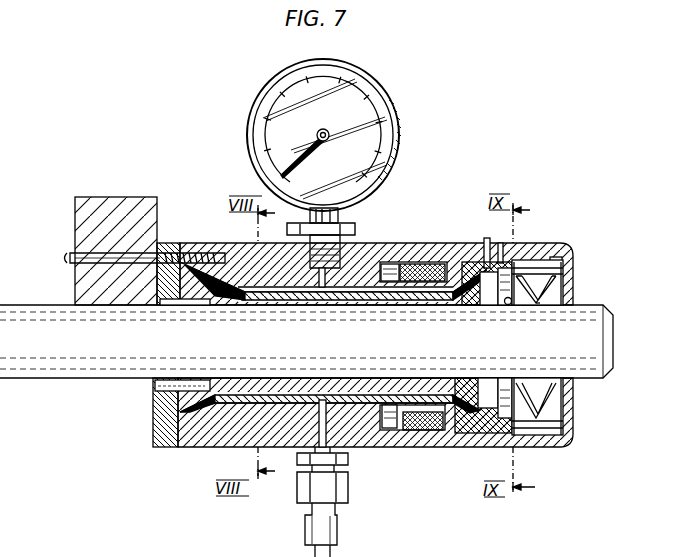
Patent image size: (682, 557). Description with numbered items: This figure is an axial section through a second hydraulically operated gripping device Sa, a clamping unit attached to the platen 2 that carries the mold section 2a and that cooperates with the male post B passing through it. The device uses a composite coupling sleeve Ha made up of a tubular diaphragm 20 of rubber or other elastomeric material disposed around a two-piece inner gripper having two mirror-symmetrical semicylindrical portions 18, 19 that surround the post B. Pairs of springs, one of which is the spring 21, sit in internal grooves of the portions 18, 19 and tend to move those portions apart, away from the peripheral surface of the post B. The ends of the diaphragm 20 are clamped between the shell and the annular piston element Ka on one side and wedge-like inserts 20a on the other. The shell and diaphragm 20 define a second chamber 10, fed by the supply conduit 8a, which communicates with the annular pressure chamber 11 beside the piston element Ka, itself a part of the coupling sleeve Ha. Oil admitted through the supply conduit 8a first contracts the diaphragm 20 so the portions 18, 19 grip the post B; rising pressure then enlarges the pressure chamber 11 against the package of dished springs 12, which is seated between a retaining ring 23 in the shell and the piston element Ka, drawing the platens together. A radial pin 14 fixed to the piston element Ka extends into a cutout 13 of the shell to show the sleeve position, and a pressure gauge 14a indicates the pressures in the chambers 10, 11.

The post B is at (33, 304).
The platen 2 is at (136, 213).
The mold section 2a is at (193, 447).
The second gripping device Sa is at (393, 240).
The composite coupling sleeve Ha is at (362, 285).
The pressure gauge 14a is at (394, 108).
The annular piston element Ka is at (446, 262).
The annular pressure chamber 11 is at (390, 431).
The second chamber 10 is at (358, 403).
The semicylindrical portion 18 is at (248, 290).
The semicylindrical portion 19 is at (245, 397).
The tubular diaphragm 20 is at (288, 397).
The wedge-like insert 20a is at (158, 287).
The radial pin 14 is at (482, 245).
The cutout 13 is at (500, 245).
The dished springs 12 is at (560, 283).
The retaining ring 23 is at (560, 410).
The spring 21 is at (508, 306).
The supply conduit 8a is at (312, 553).